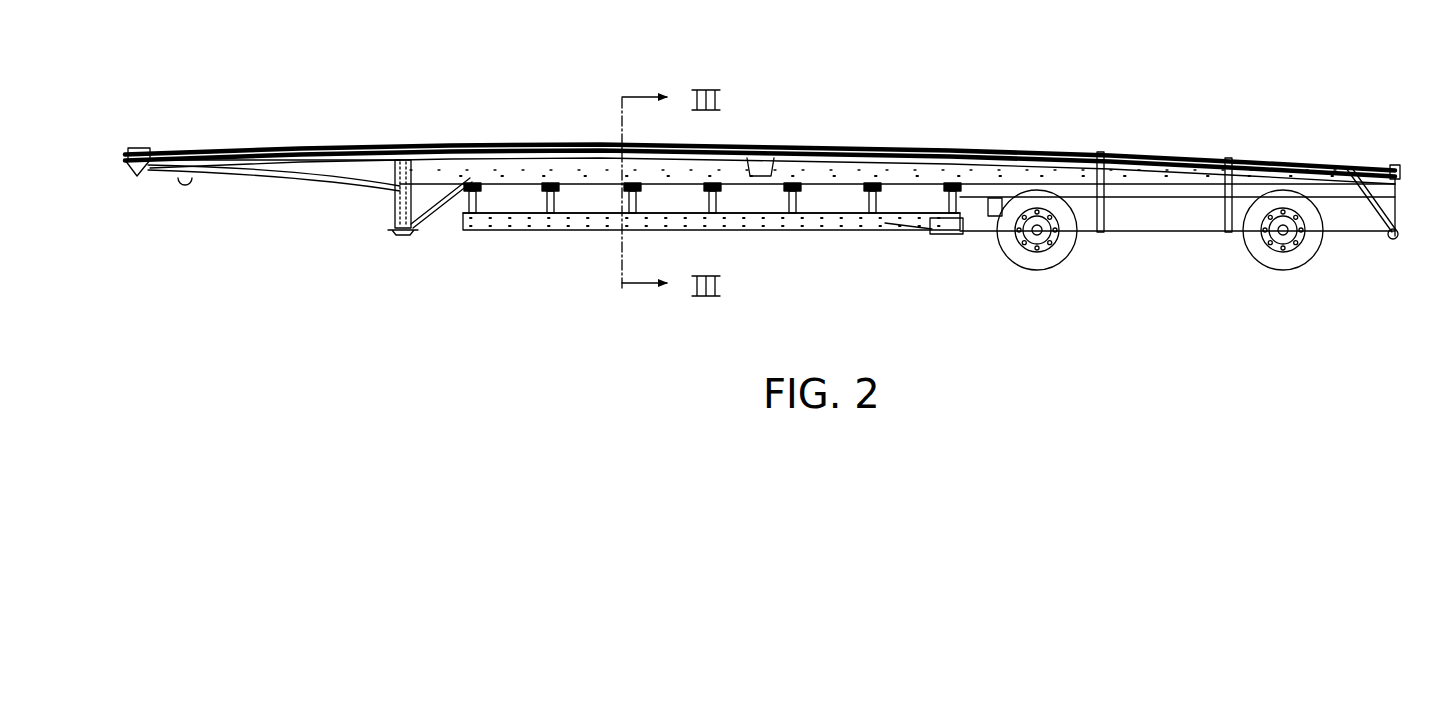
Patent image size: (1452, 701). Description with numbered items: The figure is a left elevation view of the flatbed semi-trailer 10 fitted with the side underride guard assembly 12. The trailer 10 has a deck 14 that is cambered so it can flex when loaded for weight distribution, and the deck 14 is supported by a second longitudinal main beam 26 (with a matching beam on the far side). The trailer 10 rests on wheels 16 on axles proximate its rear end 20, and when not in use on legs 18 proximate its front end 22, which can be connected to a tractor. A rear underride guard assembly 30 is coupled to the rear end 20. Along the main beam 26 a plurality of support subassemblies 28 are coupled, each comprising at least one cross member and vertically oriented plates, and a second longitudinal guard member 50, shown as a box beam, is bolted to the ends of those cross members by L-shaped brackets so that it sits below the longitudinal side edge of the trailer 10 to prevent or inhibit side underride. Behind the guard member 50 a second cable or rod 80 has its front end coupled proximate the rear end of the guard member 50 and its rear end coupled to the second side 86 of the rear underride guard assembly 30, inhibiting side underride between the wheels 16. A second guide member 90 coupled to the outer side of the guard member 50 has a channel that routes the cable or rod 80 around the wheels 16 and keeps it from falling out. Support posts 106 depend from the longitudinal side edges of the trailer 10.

The flatbed semi-trailer 10 is at (1279, 152).
The side underride guard assembly 12 is at (962, 250).
The deck 14 is at (1166, 157).
The wheels 16 is at (1047, 268).
The legs 18 is at (402, 235).
The rear end 20 is at (1409, 162).
The front end 22 is at (128, 182).
The second longitudinal main beam 26 is at (1172, 190).
The support subassemblies 28 is at (542, 206).
The rear underride guard assembly 30 is at (1402, 216).
The second longitudinal guard member 50 is at (512, 230).
The second cable or rod 80 is at (1135, 232).
The second side of rear underride guard assembly 86 is at (1402, 239).
The second guide member 90 is at (935, 220).
The support posts 106 is at (1120, 160).